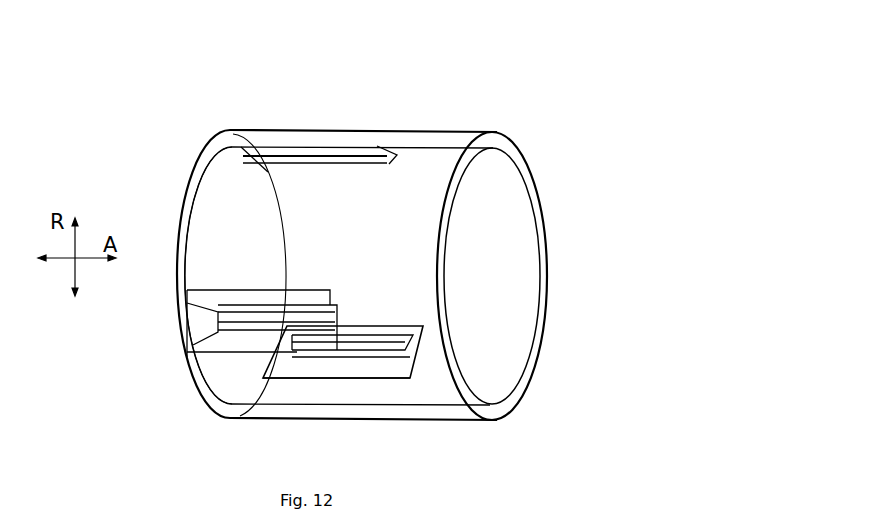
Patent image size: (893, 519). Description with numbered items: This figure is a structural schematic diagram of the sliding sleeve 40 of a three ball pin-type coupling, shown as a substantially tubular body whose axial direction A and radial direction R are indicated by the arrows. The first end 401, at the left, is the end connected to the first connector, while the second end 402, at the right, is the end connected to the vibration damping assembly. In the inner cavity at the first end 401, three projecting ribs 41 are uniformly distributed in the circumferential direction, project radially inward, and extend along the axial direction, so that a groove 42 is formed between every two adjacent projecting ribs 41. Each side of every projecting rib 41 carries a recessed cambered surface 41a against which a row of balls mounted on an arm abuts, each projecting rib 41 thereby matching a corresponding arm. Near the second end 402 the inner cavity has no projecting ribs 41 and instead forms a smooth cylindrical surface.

The sliding sleeve 40 is at (345, 126).
The first end 401 is at (199, 144).
The second end 402 is at (535, 142).
The projecting rib 41 is at (386, 163).
The cambered surface 41a is at (323, 367).
The groove 42 is at (207, 236).